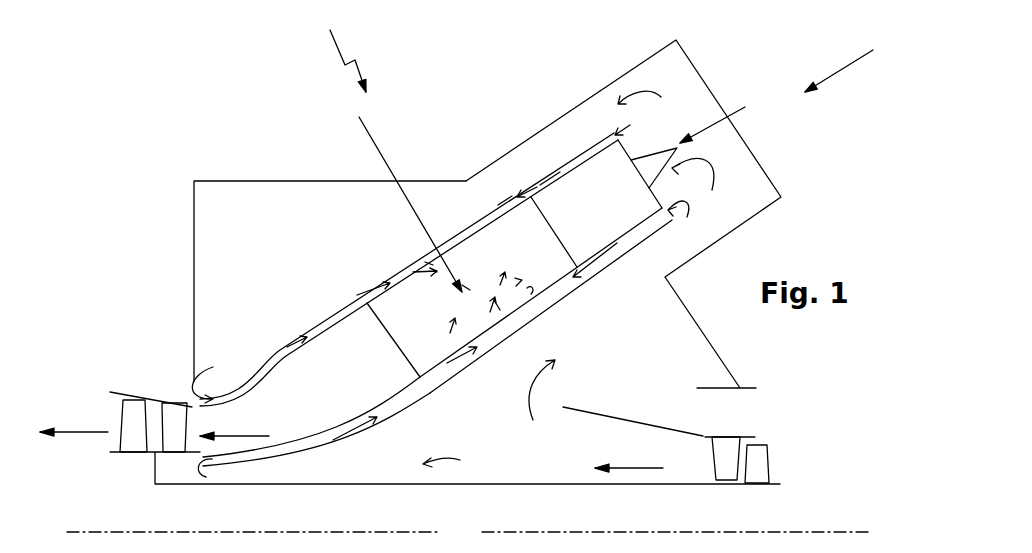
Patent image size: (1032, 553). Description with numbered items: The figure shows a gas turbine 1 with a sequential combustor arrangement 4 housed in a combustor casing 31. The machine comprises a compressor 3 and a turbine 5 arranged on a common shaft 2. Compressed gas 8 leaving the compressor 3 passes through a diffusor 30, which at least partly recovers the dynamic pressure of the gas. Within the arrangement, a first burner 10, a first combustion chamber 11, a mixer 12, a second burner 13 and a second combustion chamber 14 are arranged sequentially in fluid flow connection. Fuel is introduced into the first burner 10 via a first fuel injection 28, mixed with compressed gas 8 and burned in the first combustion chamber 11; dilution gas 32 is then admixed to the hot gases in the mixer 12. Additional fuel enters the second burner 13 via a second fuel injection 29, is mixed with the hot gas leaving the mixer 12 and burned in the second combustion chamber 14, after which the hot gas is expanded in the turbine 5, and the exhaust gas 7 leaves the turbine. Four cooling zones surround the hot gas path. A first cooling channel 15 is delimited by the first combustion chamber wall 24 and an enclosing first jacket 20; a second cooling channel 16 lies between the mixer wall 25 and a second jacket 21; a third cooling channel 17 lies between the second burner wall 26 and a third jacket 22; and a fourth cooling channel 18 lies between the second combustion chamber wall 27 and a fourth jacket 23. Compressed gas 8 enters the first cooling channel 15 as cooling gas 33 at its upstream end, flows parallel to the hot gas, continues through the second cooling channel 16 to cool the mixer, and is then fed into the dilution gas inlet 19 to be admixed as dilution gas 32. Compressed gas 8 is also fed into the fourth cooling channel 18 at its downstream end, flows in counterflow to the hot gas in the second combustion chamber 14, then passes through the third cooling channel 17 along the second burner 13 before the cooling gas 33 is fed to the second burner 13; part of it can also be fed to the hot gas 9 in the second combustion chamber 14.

The gas turbine 1 is at (319, 23).
The shaft 2 is at (468, 531).
The compressor 3 is at (758, 460).
The sequential combustor arrangement 4 is at (813, 58).
The turbine 5 is at (131, 427).
The exhaust gas 7 is at (74, 422).
The compressed gas 8 is at (629, 458).
The hot gas 9 is at (234, 425).
The first burner 10 is at (664, 154).
The first combustion chamber 11 is at (596, 203).
The mixer 12 is at (514, 262).
The second burner 13 is at (431, 336).
The second combustion chamber 14 is at (314, 424).
The first cooling channel 15 is at (576, 163).
The second cooling channel 16 is at (508, 197).
The third cooling channel 17 is at (433, 265).
The fourth cooling channel 18 is at (312, 328).
The dilution gas inlet 19 is at (500, 310).
The first jacket 20 is at (557, 167).
The second jacket 21 is at (470, 290).
The third jacket 22 is at (413, 272).
The fourth jacket 23 is at (278, 343).
The first combustion chamber wall 24 is at (546, 193).
The mixer wall 25 is at (503, 197).
The second burner wall 26 is at (437, 272).
The second combustion chamber wall 27 is at (340, 300).
The first fuel injection 28 is at (623, 214).
The second fuel injection 29 is at (394, 192).
The diffusor 30 is at (590, 439).
The combustor casing 31 is at (278, 181).
The dilution gas 32 is at (522, 280).
The cooling gas 33 is at (363, 427).